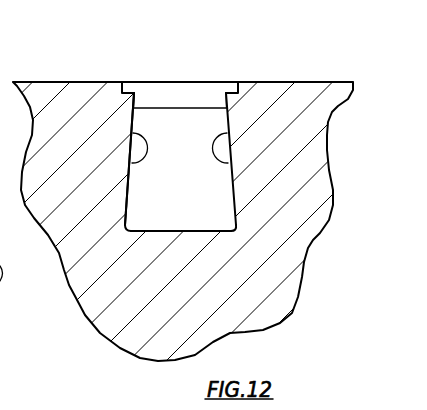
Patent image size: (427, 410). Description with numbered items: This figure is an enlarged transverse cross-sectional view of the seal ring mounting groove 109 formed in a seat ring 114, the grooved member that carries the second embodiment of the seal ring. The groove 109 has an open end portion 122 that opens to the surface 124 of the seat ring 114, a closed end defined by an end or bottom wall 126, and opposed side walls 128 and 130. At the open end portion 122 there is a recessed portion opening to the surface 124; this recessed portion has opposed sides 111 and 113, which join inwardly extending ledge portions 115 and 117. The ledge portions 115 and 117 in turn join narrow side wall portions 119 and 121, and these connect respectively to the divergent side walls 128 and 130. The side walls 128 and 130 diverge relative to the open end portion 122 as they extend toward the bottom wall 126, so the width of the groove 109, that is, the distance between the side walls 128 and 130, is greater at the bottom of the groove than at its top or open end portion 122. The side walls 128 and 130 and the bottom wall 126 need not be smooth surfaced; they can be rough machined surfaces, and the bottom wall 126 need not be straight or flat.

The seal ring mounting groove 109 is at (236, 230).
The side of recessed portion 111 is at (123, 81).
The side of recessed portion 113 is at (238, 91).
The seat ring 114 is at (270, 92).
The ledge portion 115 is at (127, 90).
The ledge portion 117 is at (227, 90).
The narrow side wall portion 119 is at (145, 104).
The narrow side wall portion 121 is at (222, 98).
The open end portion 122 is at (135, 123).
The surface of seat ring 124 is at (80, 82).
The bottom wall 126 is at (157, 231).
The side wall 128 is at (129, 135).
The side wall 130 is at (230, 153).